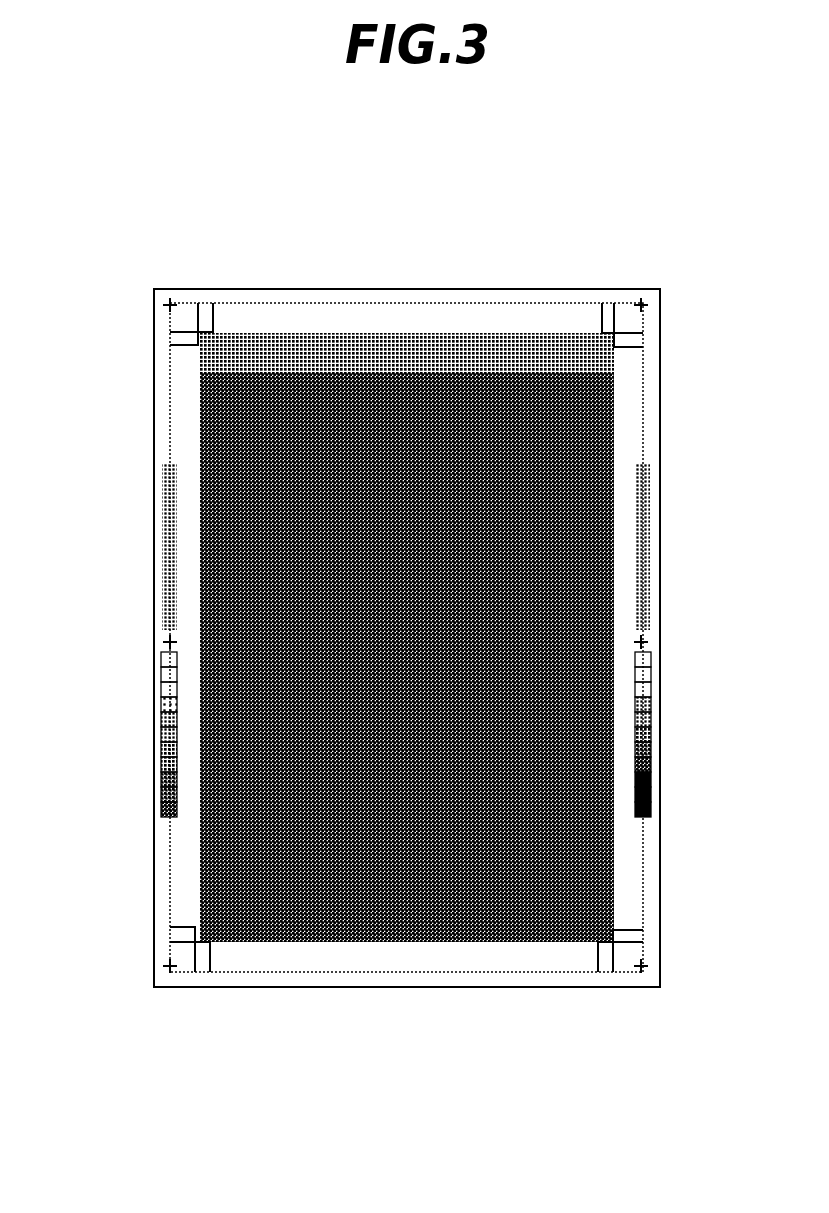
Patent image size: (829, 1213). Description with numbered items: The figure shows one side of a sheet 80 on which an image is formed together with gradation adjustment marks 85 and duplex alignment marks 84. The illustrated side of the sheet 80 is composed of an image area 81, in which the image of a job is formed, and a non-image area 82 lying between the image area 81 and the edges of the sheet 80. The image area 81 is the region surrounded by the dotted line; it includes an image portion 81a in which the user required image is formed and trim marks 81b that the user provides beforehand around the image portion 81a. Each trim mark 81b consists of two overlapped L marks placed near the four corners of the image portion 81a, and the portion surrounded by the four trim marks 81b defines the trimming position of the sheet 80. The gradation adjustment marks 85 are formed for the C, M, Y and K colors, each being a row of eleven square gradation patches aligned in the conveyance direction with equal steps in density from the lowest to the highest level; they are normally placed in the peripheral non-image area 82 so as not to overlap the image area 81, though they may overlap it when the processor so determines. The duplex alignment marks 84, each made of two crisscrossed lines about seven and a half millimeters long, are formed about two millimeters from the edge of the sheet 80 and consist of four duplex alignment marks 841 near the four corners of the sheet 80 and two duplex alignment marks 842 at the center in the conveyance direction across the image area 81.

The sheet 80 is at (548, 248).
The image area 81 is at (333, 301).
The image portion 81a is at (600, 421).
The trim marks 81b is at (166, 331).
The non-image area 82 is at (430, 297).
The duplex alignment marks 84 is at (405, 638).
The duplex alignment marks (corner) 841 is at (166, 304).
The duplex alignment marks (center) 842 is at (165, 640).
The gradation adjustment marks 85 is at (160, 500).